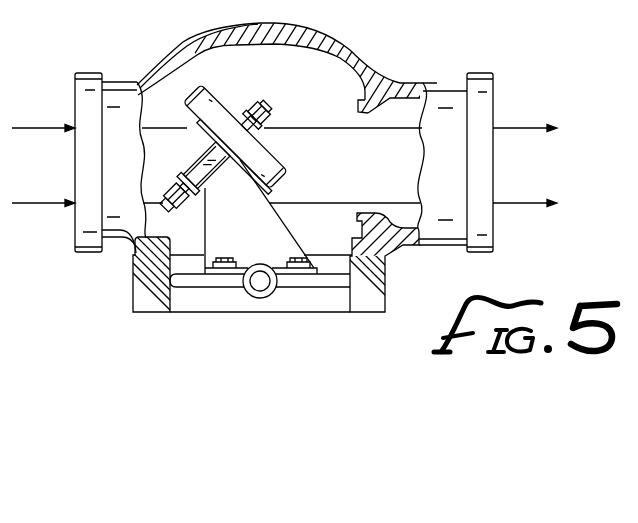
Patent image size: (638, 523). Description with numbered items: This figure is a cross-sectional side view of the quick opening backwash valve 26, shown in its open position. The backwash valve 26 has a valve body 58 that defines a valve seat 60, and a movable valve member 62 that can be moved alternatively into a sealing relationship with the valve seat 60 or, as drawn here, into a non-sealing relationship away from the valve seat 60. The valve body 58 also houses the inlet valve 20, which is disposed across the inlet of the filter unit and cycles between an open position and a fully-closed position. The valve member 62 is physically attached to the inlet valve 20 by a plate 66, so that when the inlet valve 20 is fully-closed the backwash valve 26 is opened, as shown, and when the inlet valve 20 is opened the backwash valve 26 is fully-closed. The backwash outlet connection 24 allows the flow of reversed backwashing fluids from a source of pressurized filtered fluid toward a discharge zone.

The inlet valve 20 is at (295, 284).
The backwash outlet connection 24 is at (494, 107).
The backwash valve 26 is at (256, 29).
The valve body 58 is at (358, 52).
The valve seat 60 is at (357, 105).
The movable valve member 62 is at (229, 104).
The plate 66 is at (247, 230).